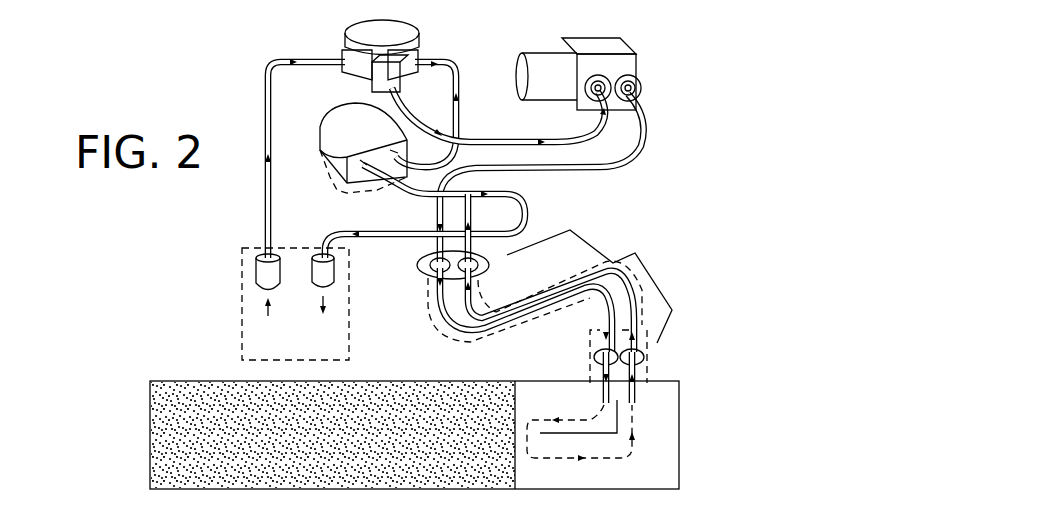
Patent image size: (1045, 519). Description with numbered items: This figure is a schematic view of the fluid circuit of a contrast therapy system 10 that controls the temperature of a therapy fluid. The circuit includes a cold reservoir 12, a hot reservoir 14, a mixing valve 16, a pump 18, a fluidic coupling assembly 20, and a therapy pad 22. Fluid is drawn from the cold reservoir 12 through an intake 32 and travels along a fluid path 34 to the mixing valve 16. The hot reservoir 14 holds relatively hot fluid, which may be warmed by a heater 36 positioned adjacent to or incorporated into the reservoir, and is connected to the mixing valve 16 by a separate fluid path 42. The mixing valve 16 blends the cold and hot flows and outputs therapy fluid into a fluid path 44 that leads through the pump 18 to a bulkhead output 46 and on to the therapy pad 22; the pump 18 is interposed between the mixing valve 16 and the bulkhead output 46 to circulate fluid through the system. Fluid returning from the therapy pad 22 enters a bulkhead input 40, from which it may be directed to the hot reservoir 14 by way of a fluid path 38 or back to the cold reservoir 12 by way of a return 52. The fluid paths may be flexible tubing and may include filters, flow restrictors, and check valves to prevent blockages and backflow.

The contrast therapy system 10 is at (244, 93).
The cold reservoir 12 is at (240, 277).
The hot reservoir 14 is at (354, 136).
The mixing valve 16 is at (356, 70).
The pump 18 is at (585, 42).
The fluidic coupling assembly 20 is at (592, 316).
The therapy pad 22 is at (680, 426).
The intake 32 is at (262, 284).
The fluid path 34 is at (262, 172).
The heater 36 is at (337, 190).
The fluid path 38 is at (405, 192).
The bulkhead input 40 is at (480, 268).
The fluid path 42 is at (452, 72).
The fluid path 44 is at (537, 135).
The bulkhead output 46 is at (438, 276).
The return 52 is at (336, 278).